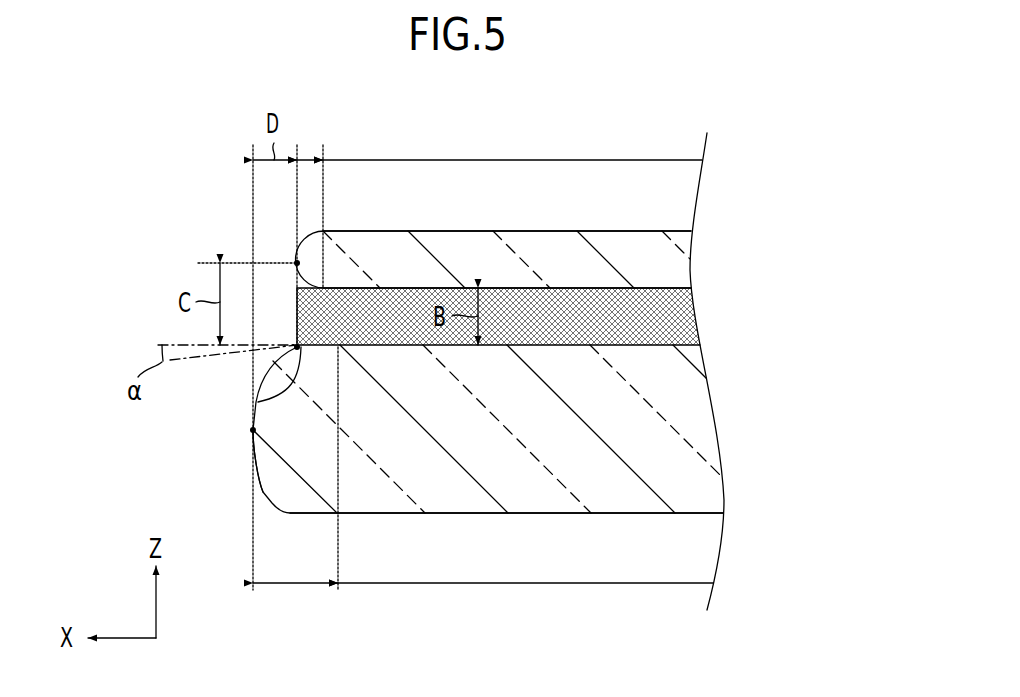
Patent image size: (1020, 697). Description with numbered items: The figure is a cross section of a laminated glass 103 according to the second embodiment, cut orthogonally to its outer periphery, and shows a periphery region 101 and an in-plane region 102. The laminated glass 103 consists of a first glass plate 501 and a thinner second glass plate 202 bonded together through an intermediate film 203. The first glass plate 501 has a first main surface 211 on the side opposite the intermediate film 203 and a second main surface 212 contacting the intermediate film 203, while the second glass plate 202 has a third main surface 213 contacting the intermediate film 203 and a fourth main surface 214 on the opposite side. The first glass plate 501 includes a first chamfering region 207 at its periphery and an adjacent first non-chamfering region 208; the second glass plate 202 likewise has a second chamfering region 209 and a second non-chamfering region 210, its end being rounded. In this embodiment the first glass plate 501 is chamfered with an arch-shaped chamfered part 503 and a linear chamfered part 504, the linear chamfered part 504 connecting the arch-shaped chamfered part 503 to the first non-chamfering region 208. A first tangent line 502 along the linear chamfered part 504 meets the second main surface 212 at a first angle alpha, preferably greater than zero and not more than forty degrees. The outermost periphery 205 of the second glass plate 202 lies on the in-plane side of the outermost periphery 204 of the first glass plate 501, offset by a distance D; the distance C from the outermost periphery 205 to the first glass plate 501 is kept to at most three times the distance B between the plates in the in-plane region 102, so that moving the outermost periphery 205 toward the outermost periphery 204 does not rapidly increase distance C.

The laminated glass 103 is at (772, 187).
The periphery region 101 is at (286, 491).
The in-plane region 102 is at (525, 609).
The second glass plate 202 is at (690, 245).
The intermediate film 203 is at (697, 325).
The outermost periphery of the first glass plate 204 is at (253, 430).
The outermost periphery of the second glass plate 205 is at (296, 262).
The first chamfering region 207 is at (297, 585).
The first non-chamfering region 208 is at (520, 585).
The second chamfering region 209 is at (310, 160).
The second non-chamfering region 210 is at (478, 160).
The first main surface 211 is at (617, 513).
The second main surface 212 is at (616, 307).
The third main surface 213 is at (533, 288).
The fourth main surface 214 is at (531, 231).
The first glass plate 501 is at (717, 428).
The first tangent line 502 is at (184, 358).
The arch-shaped chamfered part 503 is at (266, 491).
The linear chamfered part 504 is at (258, 402).